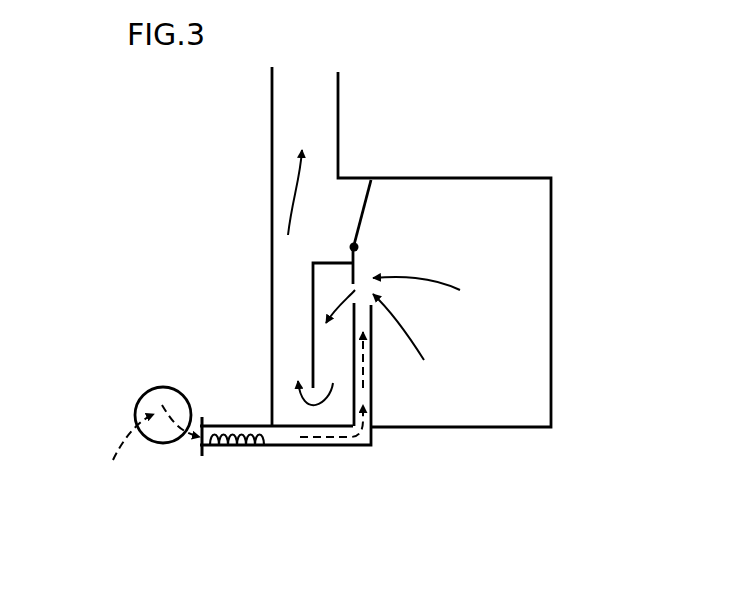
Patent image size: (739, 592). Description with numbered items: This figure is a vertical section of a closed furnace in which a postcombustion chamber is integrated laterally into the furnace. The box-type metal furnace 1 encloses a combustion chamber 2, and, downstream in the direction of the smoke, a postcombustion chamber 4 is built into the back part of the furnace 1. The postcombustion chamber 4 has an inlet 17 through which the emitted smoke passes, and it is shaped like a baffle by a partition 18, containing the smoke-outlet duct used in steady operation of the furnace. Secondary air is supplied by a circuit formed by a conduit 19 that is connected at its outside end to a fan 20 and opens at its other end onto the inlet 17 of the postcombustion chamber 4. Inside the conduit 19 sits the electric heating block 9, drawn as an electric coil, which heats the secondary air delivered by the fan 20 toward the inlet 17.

The metal furnace 1 is at (569, 204).
The combustion chamber 2 is at (487, 343).
The postcombustion chamber 4 is at (337, 362).
The electric heating block 9 is at (234, 454).
The inlet 17 is at (374, 243).
The partition 18 is at (313, 316).
The conduit 19 is at (336, 457).
The fan 20 is at (128, 399).